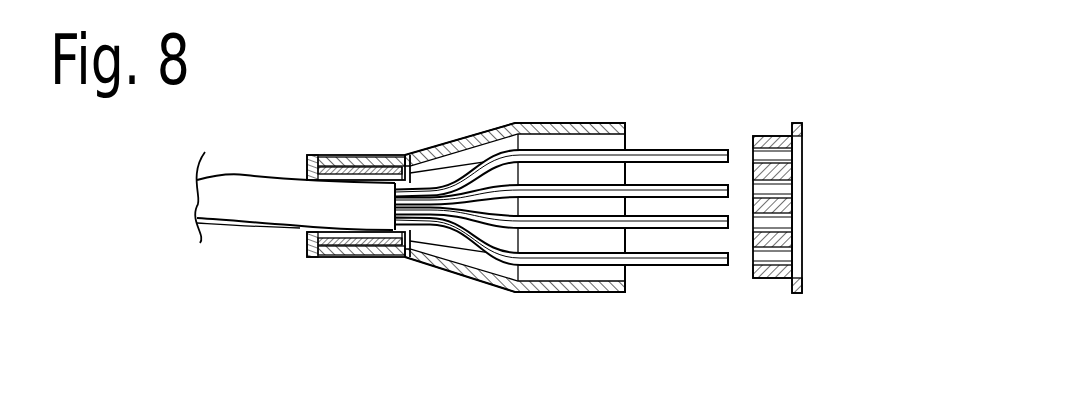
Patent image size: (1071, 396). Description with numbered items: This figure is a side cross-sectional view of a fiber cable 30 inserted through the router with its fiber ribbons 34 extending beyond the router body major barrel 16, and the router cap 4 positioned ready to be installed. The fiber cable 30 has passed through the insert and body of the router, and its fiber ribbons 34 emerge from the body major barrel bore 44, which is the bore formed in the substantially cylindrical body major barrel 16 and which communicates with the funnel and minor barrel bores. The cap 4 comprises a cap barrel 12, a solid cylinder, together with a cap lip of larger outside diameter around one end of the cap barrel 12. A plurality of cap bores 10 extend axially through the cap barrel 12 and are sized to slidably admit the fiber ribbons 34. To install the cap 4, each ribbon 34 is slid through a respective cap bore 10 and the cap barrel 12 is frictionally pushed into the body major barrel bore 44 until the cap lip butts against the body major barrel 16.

The cap 4 is at (798, 120).
The cap bores 10 is at (797, 158).
The cap barrel 12 is at (770, 278).
The body major barrel 16 is at (550, 122).
The fiber cable 30 is at (252, 175).
The fiber ribbons 34 is at (709, 180).
The body major barrel bore 44 is at (582, 140).